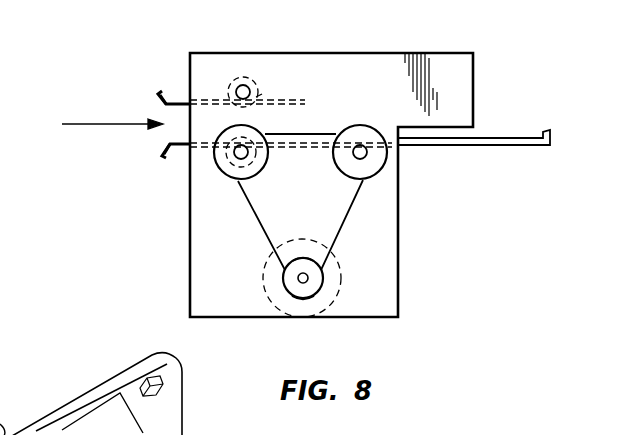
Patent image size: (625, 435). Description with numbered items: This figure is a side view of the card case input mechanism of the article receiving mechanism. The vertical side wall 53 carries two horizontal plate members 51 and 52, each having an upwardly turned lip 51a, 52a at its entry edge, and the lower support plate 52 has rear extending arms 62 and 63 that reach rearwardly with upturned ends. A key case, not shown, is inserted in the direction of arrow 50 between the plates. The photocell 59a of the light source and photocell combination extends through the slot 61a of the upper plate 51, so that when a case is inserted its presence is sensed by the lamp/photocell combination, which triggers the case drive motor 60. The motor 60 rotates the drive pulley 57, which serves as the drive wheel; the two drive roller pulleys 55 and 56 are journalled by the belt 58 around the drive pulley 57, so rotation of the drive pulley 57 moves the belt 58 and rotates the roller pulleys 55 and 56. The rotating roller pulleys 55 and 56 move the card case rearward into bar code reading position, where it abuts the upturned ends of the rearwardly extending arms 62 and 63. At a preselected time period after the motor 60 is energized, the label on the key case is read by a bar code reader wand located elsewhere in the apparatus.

The arrow 50 is at (104, 126).
The horizontal plate member 51 is at (177, 97).
The upwardly turned lip 51a is at (164, 104).
The horizontal plate member 52 is at (178, 152).
The upwardly turned lip 52a is at (166, 145).
The vertical side wall 53 is at (442, 58).
The drive roller pulley 55 is at (262, 172).
The drive roller pulley 56 is at (379, 170).
The drive pulley 57 is at (323, 283).
The belt 58 is at (266, 240).
The photocell 59a is at (256, 79).
The case drive motor 60 is at (342, 318).
The slot 61a is at (258, 97).
The rear extending arm 62 is at (516, 137).
The rear extending arm 63 is at (528, 146).